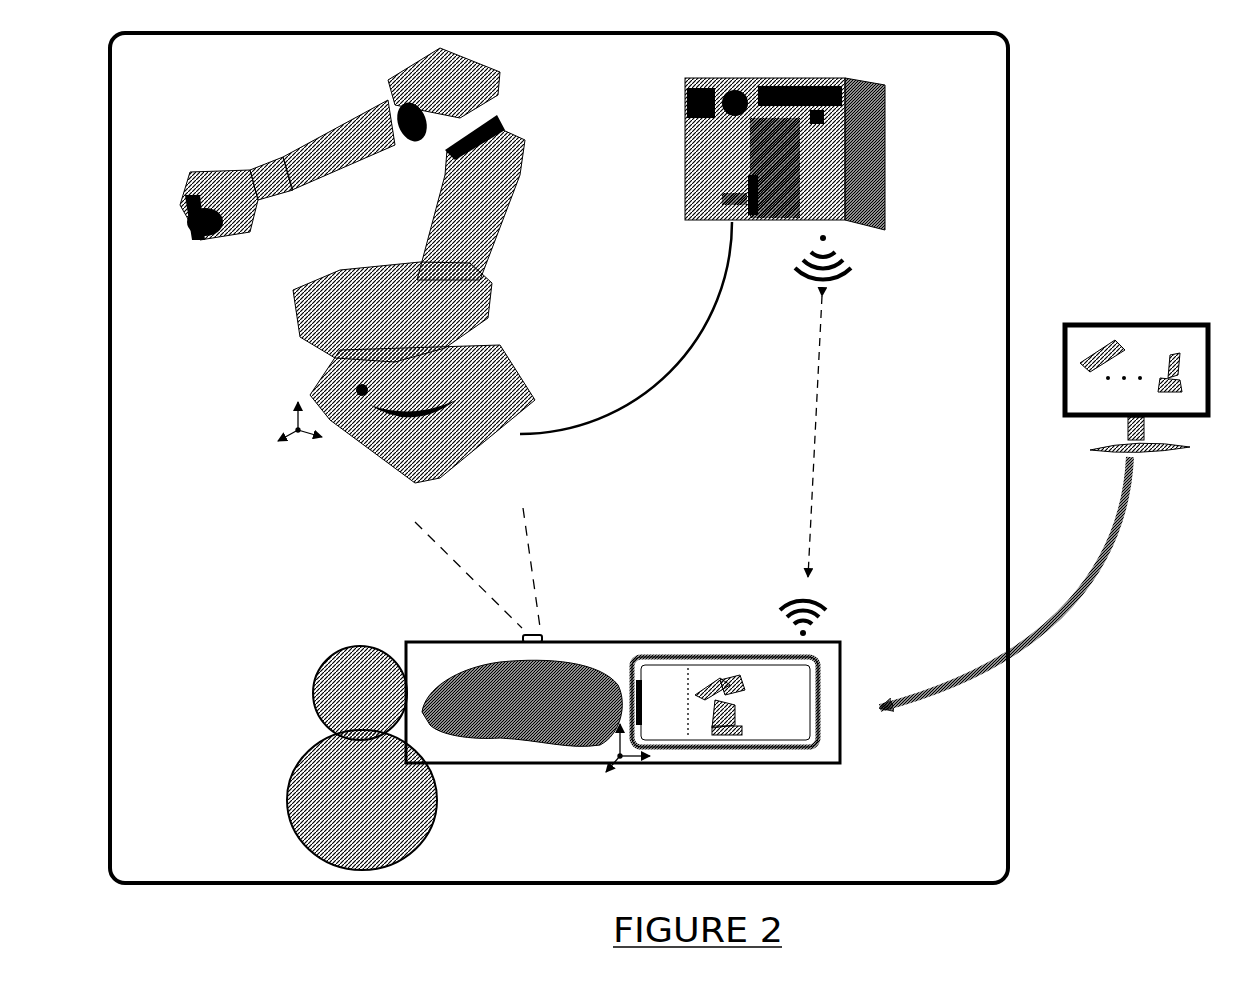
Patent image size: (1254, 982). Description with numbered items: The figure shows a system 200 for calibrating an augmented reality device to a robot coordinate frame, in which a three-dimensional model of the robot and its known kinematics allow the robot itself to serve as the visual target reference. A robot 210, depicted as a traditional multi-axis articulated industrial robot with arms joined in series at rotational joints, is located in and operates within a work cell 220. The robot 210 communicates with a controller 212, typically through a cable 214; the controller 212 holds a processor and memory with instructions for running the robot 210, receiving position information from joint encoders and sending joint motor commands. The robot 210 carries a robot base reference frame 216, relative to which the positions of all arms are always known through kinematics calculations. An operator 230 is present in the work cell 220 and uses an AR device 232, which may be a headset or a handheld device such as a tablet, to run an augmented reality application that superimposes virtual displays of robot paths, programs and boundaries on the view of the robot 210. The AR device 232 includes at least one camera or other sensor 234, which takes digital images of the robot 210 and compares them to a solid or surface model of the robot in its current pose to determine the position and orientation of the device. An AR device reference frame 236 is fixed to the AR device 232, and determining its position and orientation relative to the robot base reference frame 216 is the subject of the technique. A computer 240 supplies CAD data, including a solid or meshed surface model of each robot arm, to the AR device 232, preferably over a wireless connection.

The system 200 is at (1170, 738).
The robot 210 is at (268, 370).
The controller 212 is at (682, 170).
The cable 214 is at (672, 373).
The robot base reference frame 216 is at (298, 434).
The work cell 220 is at (1010, 118).
The operator 230 is at (437, 803).
The AR device 232 is at (840, 763).
The camera or other sensor 234 is at (523, 635).
The AR device reference frame 236 is at (622, 758).
The computer 240 is at (1093, 323).